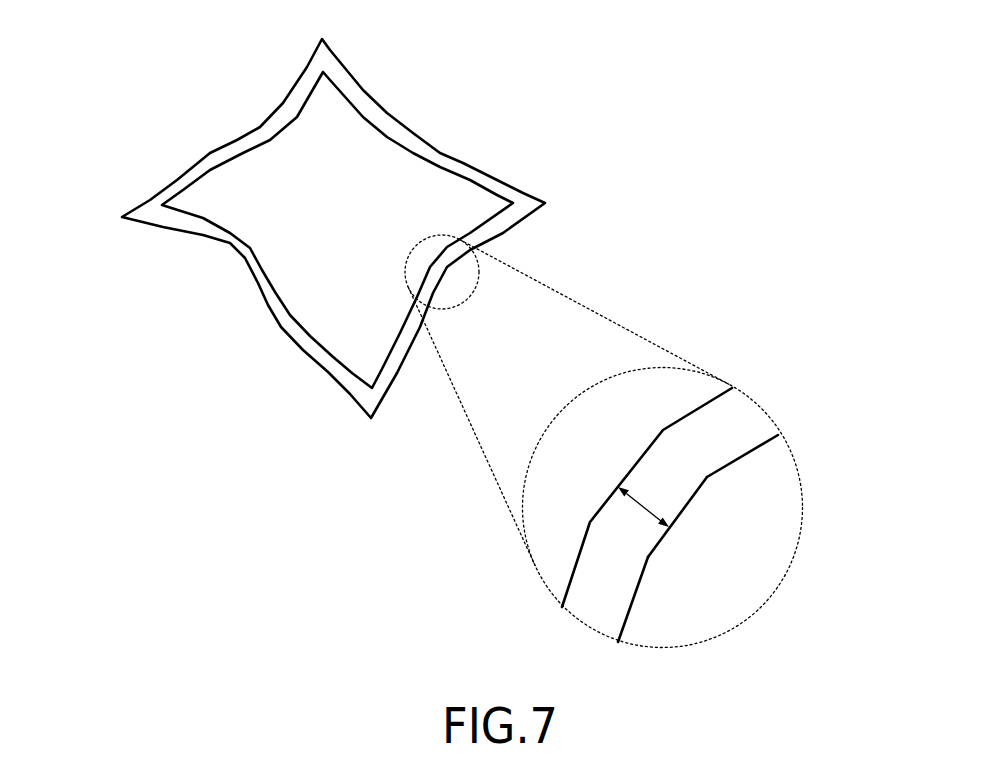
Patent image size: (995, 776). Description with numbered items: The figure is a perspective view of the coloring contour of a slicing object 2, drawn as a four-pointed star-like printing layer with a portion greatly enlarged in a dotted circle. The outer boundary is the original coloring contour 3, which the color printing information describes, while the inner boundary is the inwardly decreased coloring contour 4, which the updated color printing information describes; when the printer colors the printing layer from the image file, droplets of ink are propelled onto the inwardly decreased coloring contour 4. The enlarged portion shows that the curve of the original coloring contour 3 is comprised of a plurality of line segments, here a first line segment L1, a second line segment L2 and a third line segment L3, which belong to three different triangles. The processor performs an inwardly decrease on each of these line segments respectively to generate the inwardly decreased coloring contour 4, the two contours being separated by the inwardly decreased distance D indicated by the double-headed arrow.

The slicing object 2 is at (196, 141).
The original coloring contour 3 is at (280, 329).
The inwardly decreased coloring contour 4 is at (710, 325).
The inwardly decreased distance D is at (643, 507).
The first line segment L1 is at (732, 463).
The second line segment L2 is at (672, 521).
The third line segment L3 is at (635, 595).